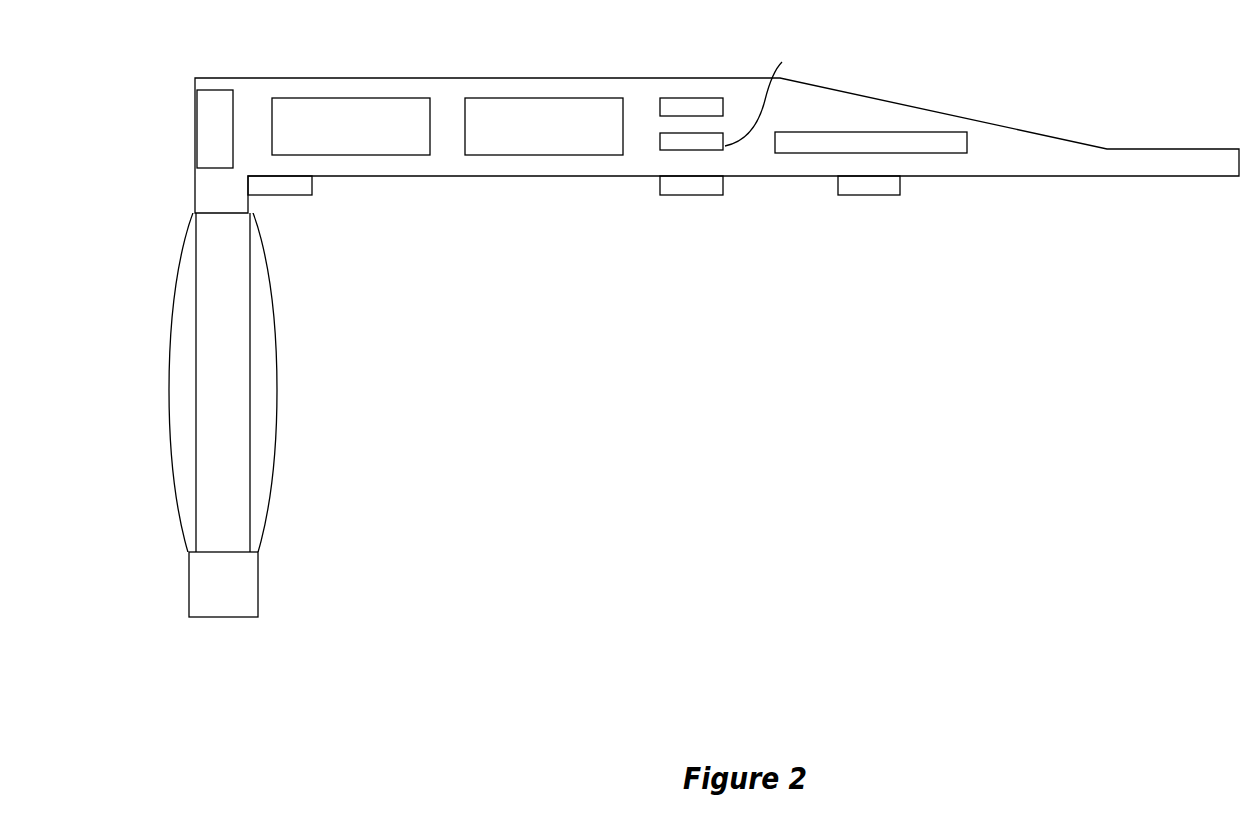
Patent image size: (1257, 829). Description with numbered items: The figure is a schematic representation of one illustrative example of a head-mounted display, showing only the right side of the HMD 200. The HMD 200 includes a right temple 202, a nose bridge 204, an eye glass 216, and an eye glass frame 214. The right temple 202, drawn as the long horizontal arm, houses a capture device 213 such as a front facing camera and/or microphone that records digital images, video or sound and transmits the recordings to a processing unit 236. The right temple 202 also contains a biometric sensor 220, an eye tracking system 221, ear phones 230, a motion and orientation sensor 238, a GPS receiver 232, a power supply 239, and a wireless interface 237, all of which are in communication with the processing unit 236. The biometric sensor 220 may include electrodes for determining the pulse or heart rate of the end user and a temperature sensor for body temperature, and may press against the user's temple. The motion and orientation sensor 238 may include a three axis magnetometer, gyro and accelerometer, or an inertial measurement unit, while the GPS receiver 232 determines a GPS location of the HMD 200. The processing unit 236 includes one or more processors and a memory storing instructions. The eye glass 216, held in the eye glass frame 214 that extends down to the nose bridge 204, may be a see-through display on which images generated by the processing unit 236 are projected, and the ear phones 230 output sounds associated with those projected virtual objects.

The HMD 200 is at (639, 463).
The right temple 202 is at (247, 90).
The nose bridge 204 is at (245, 590).
The capture device 213 is at (210, 120).
The eye glass frame 214 is at (205, 253).
The eye glass 216 is at (180, 335).
The biometric sensor 220 is at (702, 197).
The eye tracking system 221 is at (293, 195).
The ear phones 230 is at (880, 197).
The GPS receiver 232 is at (769, 98).
The processing unit 236 is at (357, 115).
The wireless interface 237 is at (568, 115).
The motion and orientation sensor 238 is at (710, 98).
The power supply 239 is at (882, 132).